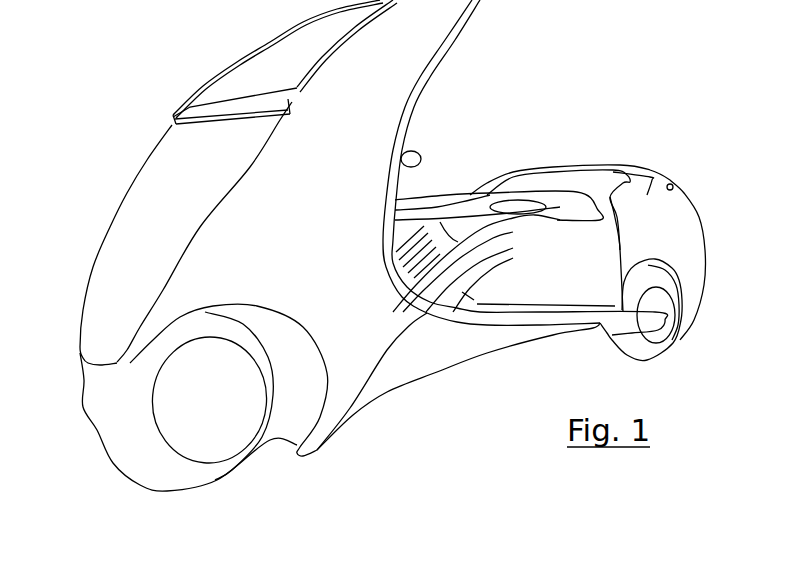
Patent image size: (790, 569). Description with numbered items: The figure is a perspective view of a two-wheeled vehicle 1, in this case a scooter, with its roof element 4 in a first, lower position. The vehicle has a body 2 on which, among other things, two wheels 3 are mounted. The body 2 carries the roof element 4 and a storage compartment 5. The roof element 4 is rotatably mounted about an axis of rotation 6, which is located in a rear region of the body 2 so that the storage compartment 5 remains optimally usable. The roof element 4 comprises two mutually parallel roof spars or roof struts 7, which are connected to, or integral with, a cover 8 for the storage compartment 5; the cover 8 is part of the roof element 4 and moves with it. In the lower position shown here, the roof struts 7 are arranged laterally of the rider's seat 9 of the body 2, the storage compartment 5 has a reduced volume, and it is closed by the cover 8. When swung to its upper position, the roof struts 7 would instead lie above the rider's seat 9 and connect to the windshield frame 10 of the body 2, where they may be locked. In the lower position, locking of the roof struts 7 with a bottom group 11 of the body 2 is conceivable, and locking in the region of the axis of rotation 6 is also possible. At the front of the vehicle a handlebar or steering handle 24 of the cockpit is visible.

The two-wheeled vehicle 1 is at (614, 99).
The body 2 is at (202, 264).
The wheels 3 is at (120, 452).
The roof element 4 is at (595, 177).
The storage compartment 5 is at (650, 200).
The axis of rotation 6 is at (683, 197).
The roof struts 7 is at (498, 265).
The cover 8 is at (647, 187).
The rider's seat 9 is at (469, 229).
The windshield frame 10 is at (205, 86).
The bottom group 11 is at (442, 357).
The steering handle 24 is at (411, 152).